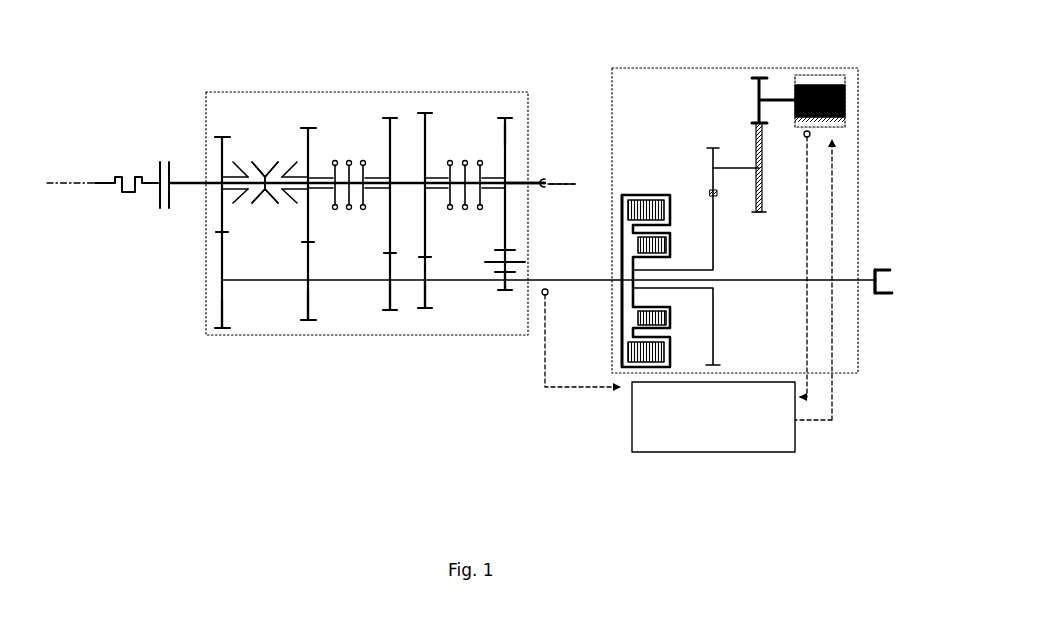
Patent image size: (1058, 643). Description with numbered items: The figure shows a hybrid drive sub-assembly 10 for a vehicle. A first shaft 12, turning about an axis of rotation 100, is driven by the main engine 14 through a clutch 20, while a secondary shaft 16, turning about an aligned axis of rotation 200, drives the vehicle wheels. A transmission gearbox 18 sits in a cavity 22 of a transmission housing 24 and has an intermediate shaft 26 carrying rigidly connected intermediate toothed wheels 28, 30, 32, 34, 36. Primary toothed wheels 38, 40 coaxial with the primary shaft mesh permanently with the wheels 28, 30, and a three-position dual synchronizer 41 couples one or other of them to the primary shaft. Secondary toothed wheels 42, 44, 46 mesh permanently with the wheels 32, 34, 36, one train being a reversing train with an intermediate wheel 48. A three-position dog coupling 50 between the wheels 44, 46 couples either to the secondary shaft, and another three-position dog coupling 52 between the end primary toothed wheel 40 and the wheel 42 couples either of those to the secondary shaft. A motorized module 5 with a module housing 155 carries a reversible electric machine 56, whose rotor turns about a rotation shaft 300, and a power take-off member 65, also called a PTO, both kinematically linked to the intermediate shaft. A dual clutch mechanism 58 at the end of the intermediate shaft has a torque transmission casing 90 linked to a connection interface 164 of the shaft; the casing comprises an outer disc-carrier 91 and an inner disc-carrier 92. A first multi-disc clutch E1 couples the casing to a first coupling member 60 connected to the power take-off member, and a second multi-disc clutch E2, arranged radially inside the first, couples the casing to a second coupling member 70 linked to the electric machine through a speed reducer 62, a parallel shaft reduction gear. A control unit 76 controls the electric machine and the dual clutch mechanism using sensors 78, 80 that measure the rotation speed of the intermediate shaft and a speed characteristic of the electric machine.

The axis of rotation 100 is at (55, 181).
The main engine 14 is at (118, 176).
The clutch 20 is at (158, 165).
The first shaft 12 is at (193, 181).
The secondary shaft 16 is at (515, 182).
The axis of rotation 200 is at (550, 184).
The hybrid drive sub-assembly 10 is at (535, 66).
The transmission gearbox 18 is at (526, 88).
The cavity 22 is at (261, 106).
The primary toothed wheel 38 is at (224, 146).
The three-position dual synchronizer 41 is at (266, 150).
The end primary toothed wheel 40 is at (311, 128).
The three-position dog coupling 52 is at (346, 145).
The secondary toothed wheel 42 is at (390, 133).
The secondary toothed wheel 44 is at (427, 130).
The three-position dog coupling 50 is at (458, 147).
The transmission housing 24 is at (492, 92).
The secondary toothed wheel 46 is at (508, 135).
The intermediate wheel 48 is at (515, 255).
The intermediate shaft 26 is at (278, 278).
The connection interface 164 is at (548, 289).
The sensor 78 is at (552, 292).
The intermediate toothed wheel 28 is at (232, 325).
The intermediate toothed wheel 30 is at (305, 302).
The intermediate toothed wheel 32 is at (372, 304).
The intermediate toothed wheel 34 is at (416, 302).
The intermediate toothed wheel 36 is at (492, 296).
The module housing 155 is at (858, 335).
The torque transmission casing 90 is at (673, 204).
The dual clutch mechanism 58 is at (656, 195).
The outer disc-carrier 91 is at (635, 194).
The first multi-disc clutch E1 is at (670, 213).
The second multi-disc clutch E2 is at (670, 244).
The first coupling member 60 is at (725, 280).
The second coupling member 70 is at (713, 317).
The speed reducer 62 is at (733, 167).
The rotation shaft 300 is at (772, 98).
The reversible electric machine 56 is at (844, 88).
The motorized module 5 is at (869, 113).
The sensor 80 is at (803, 138).
The control unit 76 is at (792, 434).
The inner disc-carrier 92 is at (623, 373).
The power take-off member PTO is at (903, 278).
The power take-off member 65 is at (892, 293).